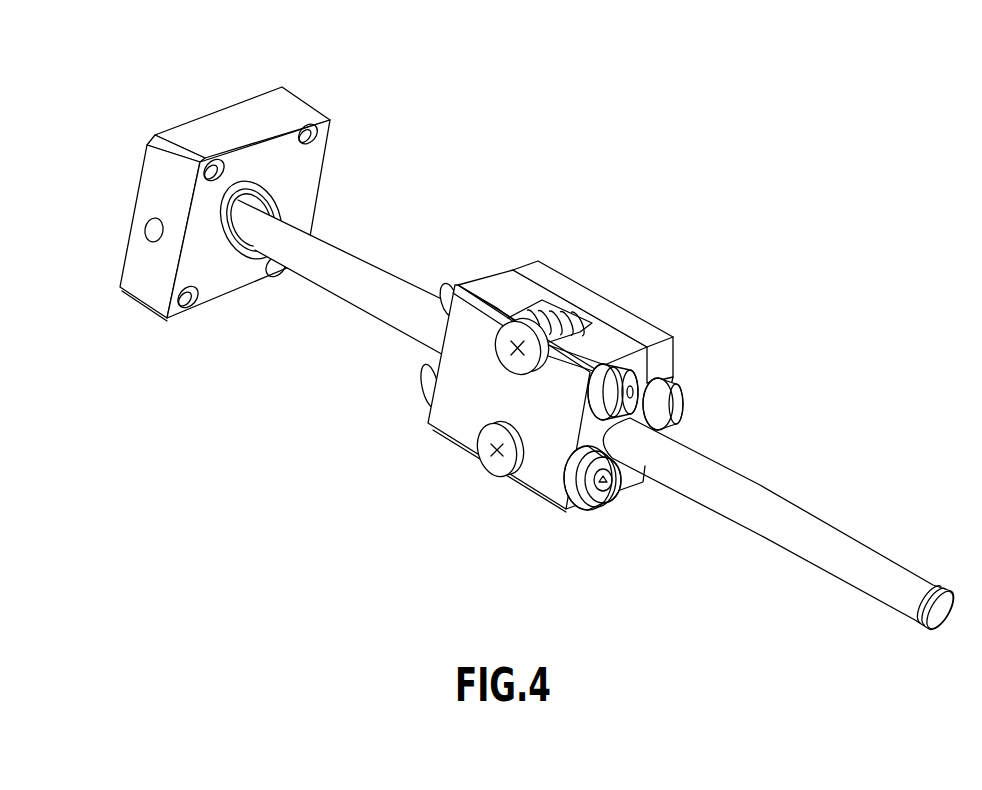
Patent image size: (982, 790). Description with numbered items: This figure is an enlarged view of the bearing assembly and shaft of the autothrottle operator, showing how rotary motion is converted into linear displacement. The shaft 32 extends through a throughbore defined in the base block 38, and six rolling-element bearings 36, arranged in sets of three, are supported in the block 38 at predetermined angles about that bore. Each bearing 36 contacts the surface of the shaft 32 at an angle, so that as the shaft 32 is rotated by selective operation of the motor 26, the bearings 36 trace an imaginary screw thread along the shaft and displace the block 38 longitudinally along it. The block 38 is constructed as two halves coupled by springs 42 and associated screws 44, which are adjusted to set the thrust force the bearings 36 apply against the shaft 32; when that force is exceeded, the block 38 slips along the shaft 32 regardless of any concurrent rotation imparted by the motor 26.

The motor 26 is at (257, 112).
The shaft 32 is at (342, 253).
The rolling-element bearings 36 is at (622, 373).
The base block 38 is at (538, 472).
The springs 42 is at (553, 322).
The screws 44 is at (510, 338).